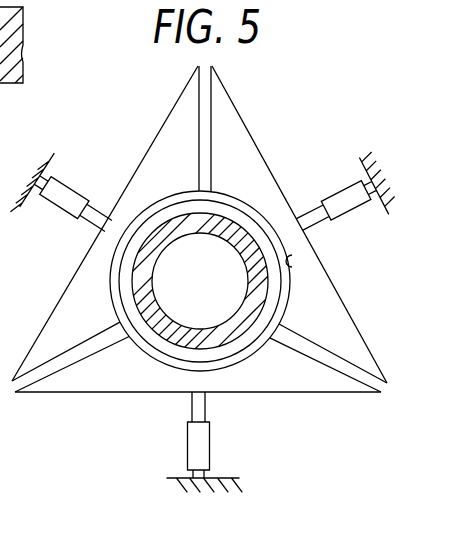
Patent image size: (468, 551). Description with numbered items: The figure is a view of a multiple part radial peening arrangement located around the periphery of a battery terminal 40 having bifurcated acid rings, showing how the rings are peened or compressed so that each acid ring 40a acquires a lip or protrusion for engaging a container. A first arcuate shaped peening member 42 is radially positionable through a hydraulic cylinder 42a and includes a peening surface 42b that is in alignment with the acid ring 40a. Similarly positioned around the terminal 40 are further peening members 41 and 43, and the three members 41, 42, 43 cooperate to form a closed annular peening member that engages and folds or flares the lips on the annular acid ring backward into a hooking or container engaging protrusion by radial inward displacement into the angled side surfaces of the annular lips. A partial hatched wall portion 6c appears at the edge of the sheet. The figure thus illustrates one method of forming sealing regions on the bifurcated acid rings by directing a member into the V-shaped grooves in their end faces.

The terminal 40 is at (222, 332).
The acid ring 40a is at (271, 302).
The peening member 41 is at (297, 377).
The first arcuate shaped peening member 42 is at (342, 295).
The hydraulic cylinder 42a is at (334, 192).
The peening surface 42b is at (291, 267).
The peening member 43 is at (141, 165).
The wall portion 6c is at (11, 62).